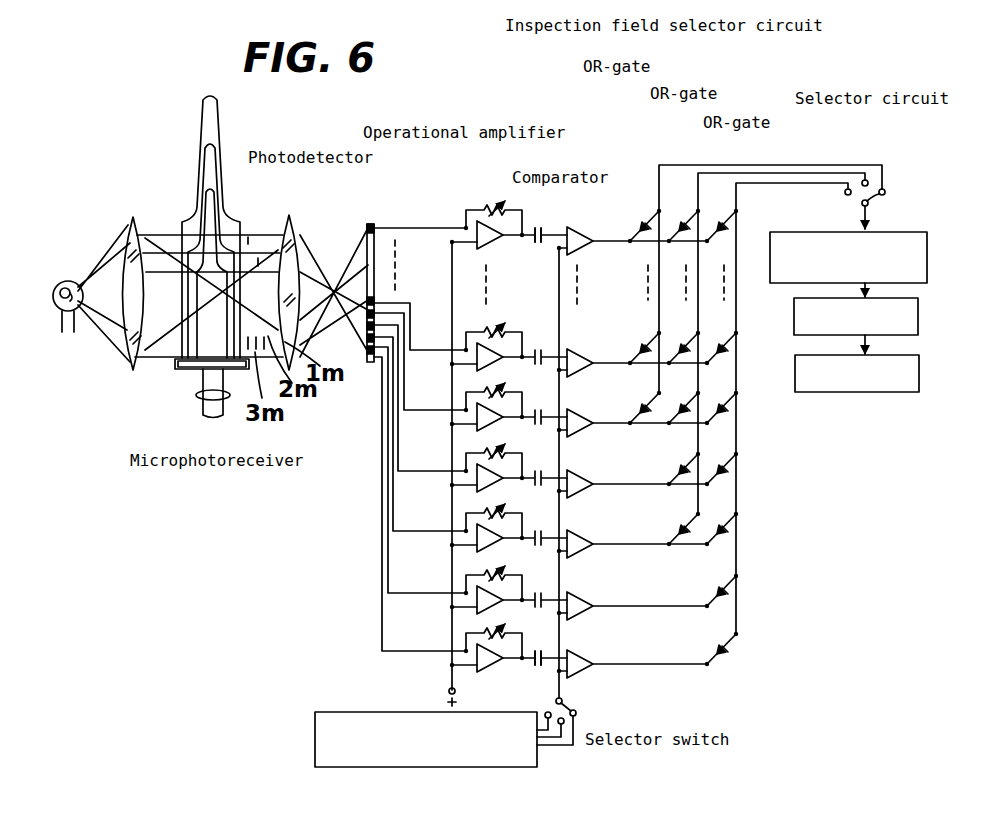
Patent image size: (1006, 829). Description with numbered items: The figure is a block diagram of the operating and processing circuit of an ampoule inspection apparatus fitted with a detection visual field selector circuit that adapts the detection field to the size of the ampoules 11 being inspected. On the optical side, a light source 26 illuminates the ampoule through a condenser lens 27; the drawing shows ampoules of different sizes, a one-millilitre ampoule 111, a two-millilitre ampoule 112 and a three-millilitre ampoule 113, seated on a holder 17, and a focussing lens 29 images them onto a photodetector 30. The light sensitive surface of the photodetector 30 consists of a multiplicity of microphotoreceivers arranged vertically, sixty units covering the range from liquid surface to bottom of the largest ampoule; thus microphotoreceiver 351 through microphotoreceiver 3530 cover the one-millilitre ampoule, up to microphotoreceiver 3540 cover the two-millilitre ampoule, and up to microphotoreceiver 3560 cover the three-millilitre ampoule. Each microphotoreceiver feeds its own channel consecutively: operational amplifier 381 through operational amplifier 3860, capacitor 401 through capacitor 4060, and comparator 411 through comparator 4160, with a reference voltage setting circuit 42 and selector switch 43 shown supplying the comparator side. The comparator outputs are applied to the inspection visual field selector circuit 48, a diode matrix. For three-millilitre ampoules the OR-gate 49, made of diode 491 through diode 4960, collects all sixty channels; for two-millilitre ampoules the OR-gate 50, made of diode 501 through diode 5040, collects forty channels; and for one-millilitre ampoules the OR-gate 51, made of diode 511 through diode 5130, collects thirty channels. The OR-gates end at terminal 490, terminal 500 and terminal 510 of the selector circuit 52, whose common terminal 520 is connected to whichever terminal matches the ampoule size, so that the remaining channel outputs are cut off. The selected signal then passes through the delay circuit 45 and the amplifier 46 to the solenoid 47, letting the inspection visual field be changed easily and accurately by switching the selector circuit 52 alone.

The ampoule 11 is at (156, 261).
The 1-ml ampoule 111 is at (200, 347).
The 2-ml ampoule 112 is at (192, 340).
The 3-ml ampoule 113 is at (149, 277).
The ampoule holder 17 is at (190, 371).
The light source 26 is at (66, 281).
The condenser lens 27 is at (128, 232).
The focussing lens 29 is at (286, 226).
The photodetector 30 is at (366, 309).
The microphotoreceiver 351 is at (366, 224).
The microphotoreceiver 3530 is at (376, 300).
The microphotoreceiver 3540 is at (376, 314).
The microphotoreceiver 3560 is at (327, 399).
The operational amplifier 381 is at (486, 212).
The operational amplifier 3860 is at (496, 671).
The capacitor 401 is at (537, 243).
The capacitor 4060 is at (539, 650).
The comparator 411 is at (579, 232).
The comparator 4160 is at (594, 668).
The reference voltage setting circuit 42 is at (441, 767).
The selector switch 43 is at (580, 706).
The delay circuit 45 is at (926, 278).
The amplifier 46 is at (918, 327).
The solenoid 47 is at (919, 383).
The inspection visual field selector circuit 48 is at (722, 70).
The OR-gate 49 is at (776, 402).
The diode 491 is at (724, 225).
The diode 4960 is at (724, 654).
The terminal 490 is at (845, 194).
The OR-gate 50 is at (751, 347).
The diode 501 is at (682, 240).
The diode 5040 is at (668, 550).
The terminal 500 is at (862, 204).
The OR-gate 51 is at (742, 272).
The diode 511 is at (643, 240).
The diode 5130 is at (632, 427).
The terminal 510 is at (886, 192).
The selector circuit 52 is at (874, 171).
The common terminal 520 is at (869, 205).